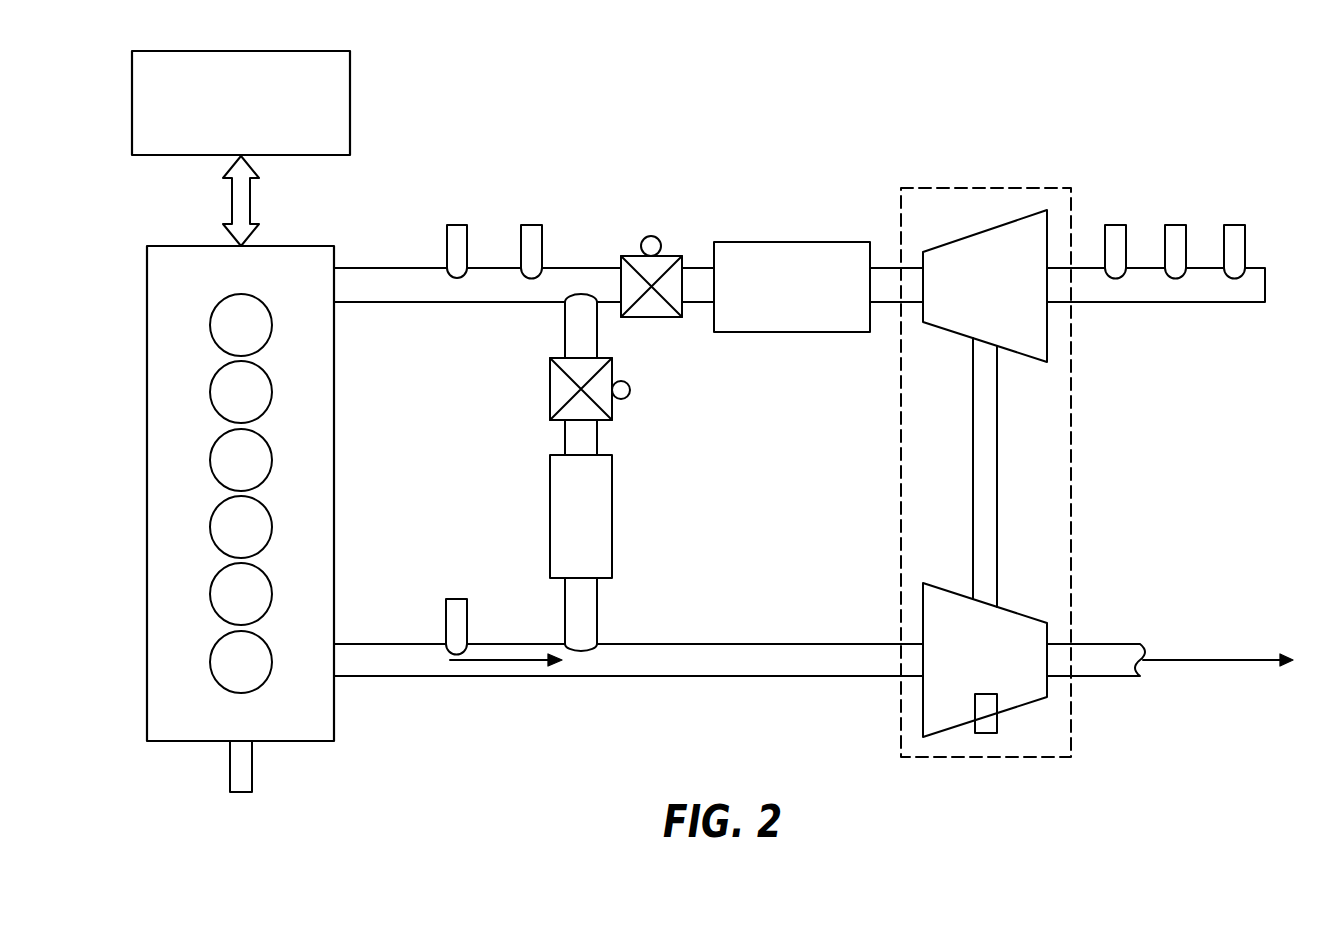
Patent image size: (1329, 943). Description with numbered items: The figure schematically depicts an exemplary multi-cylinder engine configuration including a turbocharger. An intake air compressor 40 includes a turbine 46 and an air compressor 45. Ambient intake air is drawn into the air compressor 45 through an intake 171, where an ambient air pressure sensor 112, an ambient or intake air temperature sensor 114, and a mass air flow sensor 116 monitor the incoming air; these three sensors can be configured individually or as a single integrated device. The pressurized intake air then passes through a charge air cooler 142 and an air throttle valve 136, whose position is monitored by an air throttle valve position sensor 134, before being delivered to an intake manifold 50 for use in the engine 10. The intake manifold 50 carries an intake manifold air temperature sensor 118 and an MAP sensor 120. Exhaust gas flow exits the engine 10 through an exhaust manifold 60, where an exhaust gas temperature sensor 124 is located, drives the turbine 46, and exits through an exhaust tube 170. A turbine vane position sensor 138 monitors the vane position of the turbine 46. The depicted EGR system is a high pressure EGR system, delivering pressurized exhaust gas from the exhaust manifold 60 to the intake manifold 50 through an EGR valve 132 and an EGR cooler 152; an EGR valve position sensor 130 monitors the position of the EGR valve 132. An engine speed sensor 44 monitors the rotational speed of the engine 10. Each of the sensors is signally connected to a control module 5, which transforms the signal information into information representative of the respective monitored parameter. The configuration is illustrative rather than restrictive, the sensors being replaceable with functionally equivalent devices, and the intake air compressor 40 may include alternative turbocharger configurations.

The control module 5 is at (343, 107).
The engine 10 is at (334, 252).
The engine speed sensor 44 is at (245, 775).
The intake manifold 50 is at (383, 290).
The MAP sensor 120 is at (460, 240).
The intake manifold air temperature sensor 118 is at (535, 240).
The air throttle valve position sensor 134 is at (651, 236).
The air throttle valve 136 is at (660, 264).
The charge air cooler 142 is at (787, 255).
The EGR valve 132 is at (557, 402).
The EGR valve position sensor 130 is at (630, 392).
The EGR cooler 152 is at (598, 512).
The exhaust gas temperature sensor 124 is at (455, 598).
The exhaust manifold 60 is at (714, 666).
The intake air compressor 40 is at (975, 187).
The air compressor 45 is at (1018, 243).
The turbine 46 is at (1010, 683).
The turbine vane position sensor 138 is at (986, 733).
The intake 171 is at (1160, 312).
The mass air flow sensor 116 is at (1115, 232).
The ambient or intake air temperature sensor 114 is at (1178, 240).
The ambient air pressure sensor 112 is at (1238, 240).
The exhaust tube 170 is at (1118, 632).